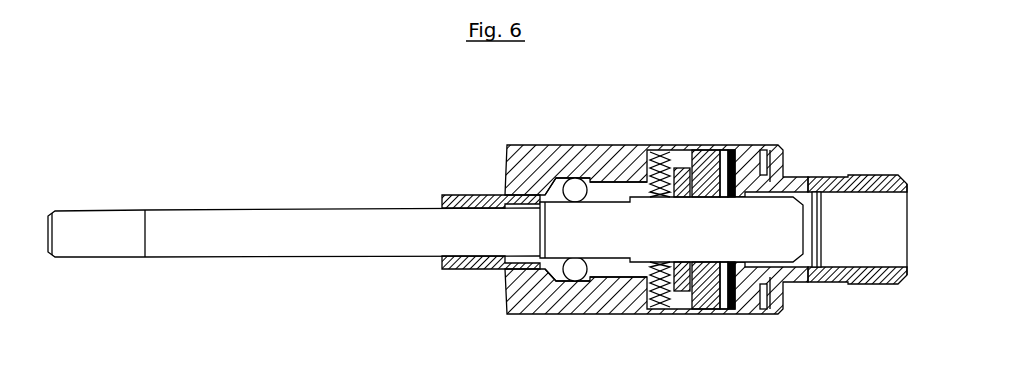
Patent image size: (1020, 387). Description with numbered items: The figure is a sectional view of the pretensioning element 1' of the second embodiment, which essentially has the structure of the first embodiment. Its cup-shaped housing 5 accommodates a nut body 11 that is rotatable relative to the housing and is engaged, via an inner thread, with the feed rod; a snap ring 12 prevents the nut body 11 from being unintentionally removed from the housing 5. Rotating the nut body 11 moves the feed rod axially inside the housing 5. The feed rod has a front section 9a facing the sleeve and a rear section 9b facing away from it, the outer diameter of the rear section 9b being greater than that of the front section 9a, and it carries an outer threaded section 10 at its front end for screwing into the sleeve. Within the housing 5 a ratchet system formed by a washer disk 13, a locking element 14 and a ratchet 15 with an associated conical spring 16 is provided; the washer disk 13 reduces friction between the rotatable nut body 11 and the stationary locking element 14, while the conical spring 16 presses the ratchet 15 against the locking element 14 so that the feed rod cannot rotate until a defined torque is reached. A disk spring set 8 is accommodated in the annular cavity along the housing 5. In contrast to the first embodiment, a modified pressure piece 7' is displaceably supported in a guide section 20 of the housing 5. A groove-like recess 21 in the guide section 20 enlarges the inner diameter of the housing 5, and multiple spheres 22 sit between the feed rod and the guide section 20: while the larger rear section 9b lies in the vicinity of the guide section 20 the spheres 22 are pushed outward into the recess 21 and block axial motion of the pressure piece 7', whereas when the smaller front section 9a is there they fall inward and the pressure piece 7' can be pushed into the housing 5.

The pretensioning element 1' is at (477, 257).
The housing 5 is at (517, 290).
The pressure piece 7' is at (470, 204).
The disk spring set 8 is at (657, 185).
The front section 9a is at (295, 223).
The rear section 9b is at (602, 238).
The outer threaded section 10 is at (107, 223).
The nut body 11 is at (877, 270).
The snap ring 12 is at (777, 303).
The washer disk 13 is at (733, 300).
The locking element 14 is at (722, 165).
The ratchet 15 is at (705, 175).
The conical spring 16 is at (674, 180).
The guide section 20 is at (613, 275).
The groove-like recess 21 is at (558, 282).
The spheres 22 is at (576, 273).